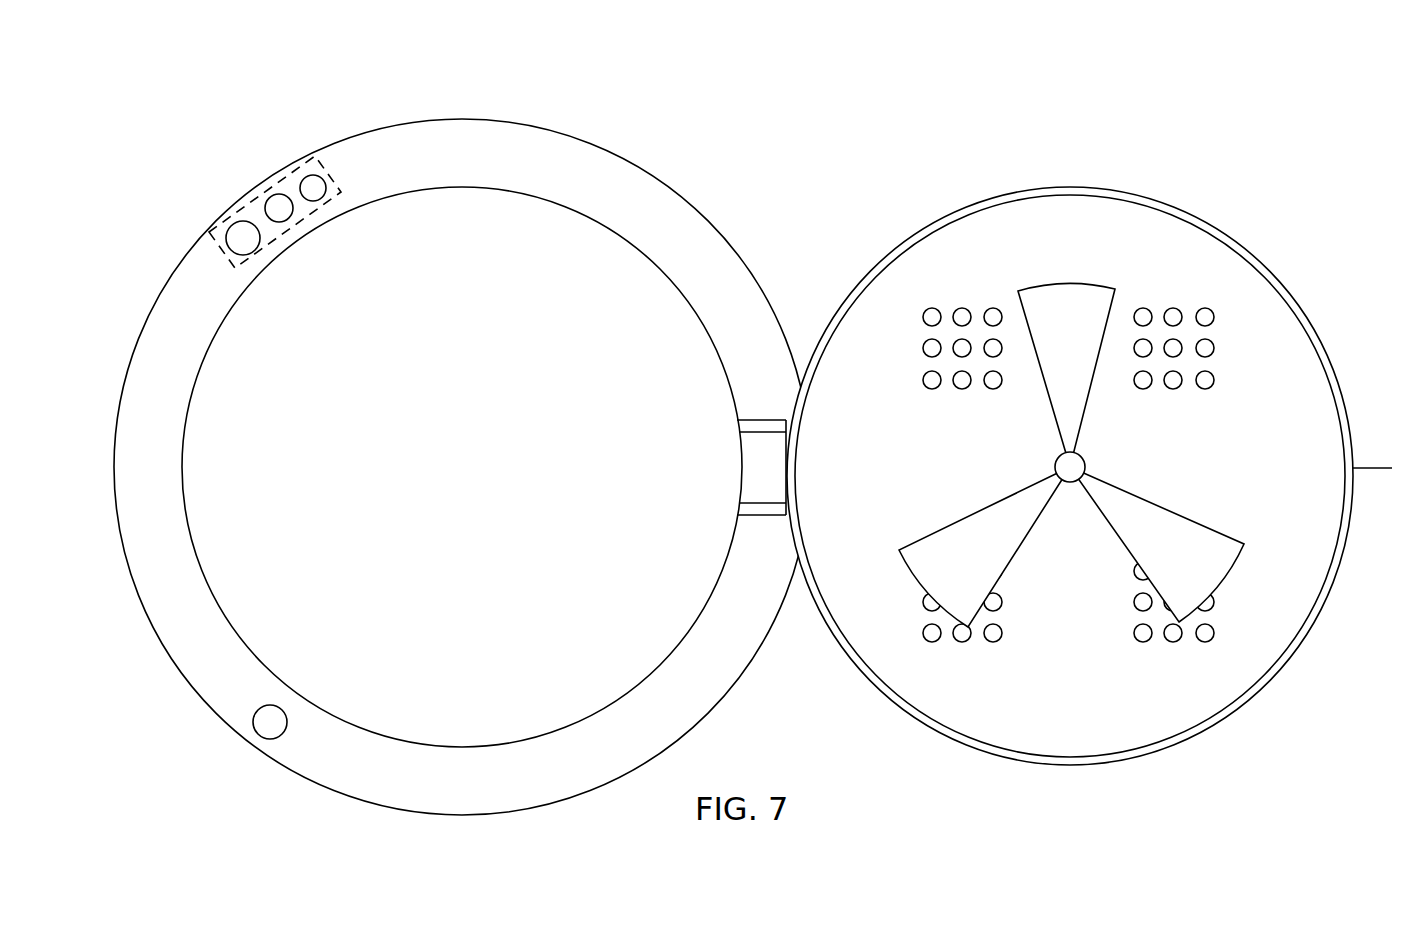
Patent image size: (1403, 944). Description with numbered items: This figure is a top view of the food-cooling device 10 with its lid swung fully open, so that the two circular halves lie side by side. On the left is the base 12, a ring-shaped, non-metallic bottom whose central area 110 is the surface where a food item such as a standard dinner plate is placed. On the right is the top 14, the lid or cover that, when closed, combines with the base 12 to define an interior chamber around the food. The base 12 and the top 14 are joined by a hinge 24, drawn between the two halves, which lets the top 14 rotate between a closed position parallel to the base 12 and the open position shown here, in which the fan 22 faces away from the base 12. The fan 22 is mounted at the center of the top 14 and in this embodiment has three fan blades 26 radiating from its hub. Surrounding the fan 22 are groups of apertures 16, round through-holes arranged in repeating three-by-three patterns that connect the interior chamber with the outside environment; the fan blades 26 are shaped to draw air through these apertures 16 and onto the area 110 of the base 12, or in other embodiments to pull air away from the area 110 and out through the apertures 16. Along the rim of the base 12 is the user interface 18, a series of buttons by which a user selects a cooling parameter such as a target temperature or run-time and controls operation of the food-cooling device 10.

The food-cooling device 10 is at (1144, 116).
The base 12 is at (588, 176).
The area 110 is at (460, 478).
The user interface 18 is at (258, 195).
The hinge 24 is at (755, 417).
The top 14 is at (1205, 226).
The apertures 16 is at (1212, 310).
The fan 22 is at (1077, 468).
The fan blades 26 is at (1207, 558).